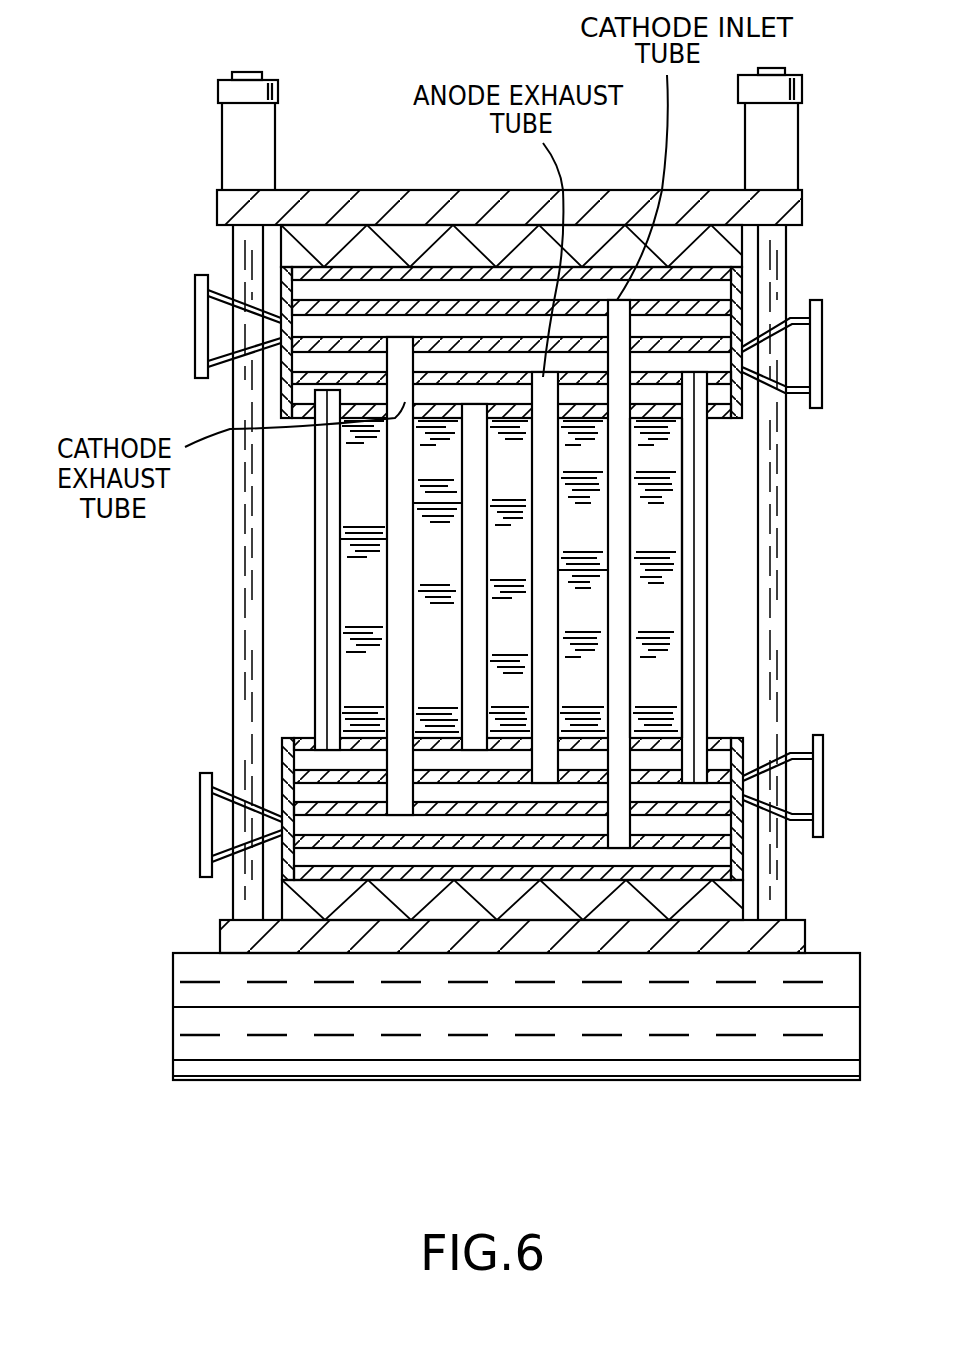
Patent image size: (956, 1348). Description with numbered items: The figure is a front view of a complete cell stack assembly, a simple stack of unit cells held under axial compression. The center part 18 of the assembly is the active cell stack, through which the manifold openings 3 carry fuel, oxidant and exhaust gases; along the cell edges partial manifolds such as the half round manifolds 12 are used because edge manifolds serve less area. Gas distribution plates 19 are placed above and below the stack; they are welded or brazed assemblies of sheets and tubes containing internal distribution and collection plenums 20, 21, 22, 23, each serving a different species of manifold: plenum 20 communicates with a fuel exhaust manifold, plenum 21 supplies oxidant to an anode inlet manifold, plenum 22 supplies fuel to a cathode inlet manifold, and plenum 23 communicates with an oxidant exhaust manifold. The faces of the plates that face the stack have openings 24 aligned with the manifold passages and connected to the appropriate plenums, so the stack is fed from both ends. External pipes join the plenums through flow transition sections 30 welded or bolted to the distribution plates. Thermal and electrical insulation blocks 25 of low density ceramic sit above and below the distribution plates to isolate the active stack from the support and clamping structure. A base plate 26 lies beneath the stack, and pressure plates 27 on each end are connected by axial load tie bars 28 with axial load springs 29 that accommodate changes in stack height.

The manifold opening 3 is at (540, 538).
The half round manifold 12 is at (330, 705).
The center part 18 is at (672, 633).
The gas distribution plate 19 is at (307, 302).
The plenum 20 is at (198, 325).
The plenum 21 is at (282, 397).
The plenum 22 is at (720, 290).
The plenum 23 is at (760, 353).
The opening 24 is at (477, 417).
The thermal and electrical insulation block 25 is at (498, 237).
The base plate 26 is at (752, 1047).
The pressure plate 27 is at (218, 205).
The axial load tie bar 28 is at (773, 497).
The axial load spring 29 is at (263, 127).
The flow transition section 30 is at (205, 356).